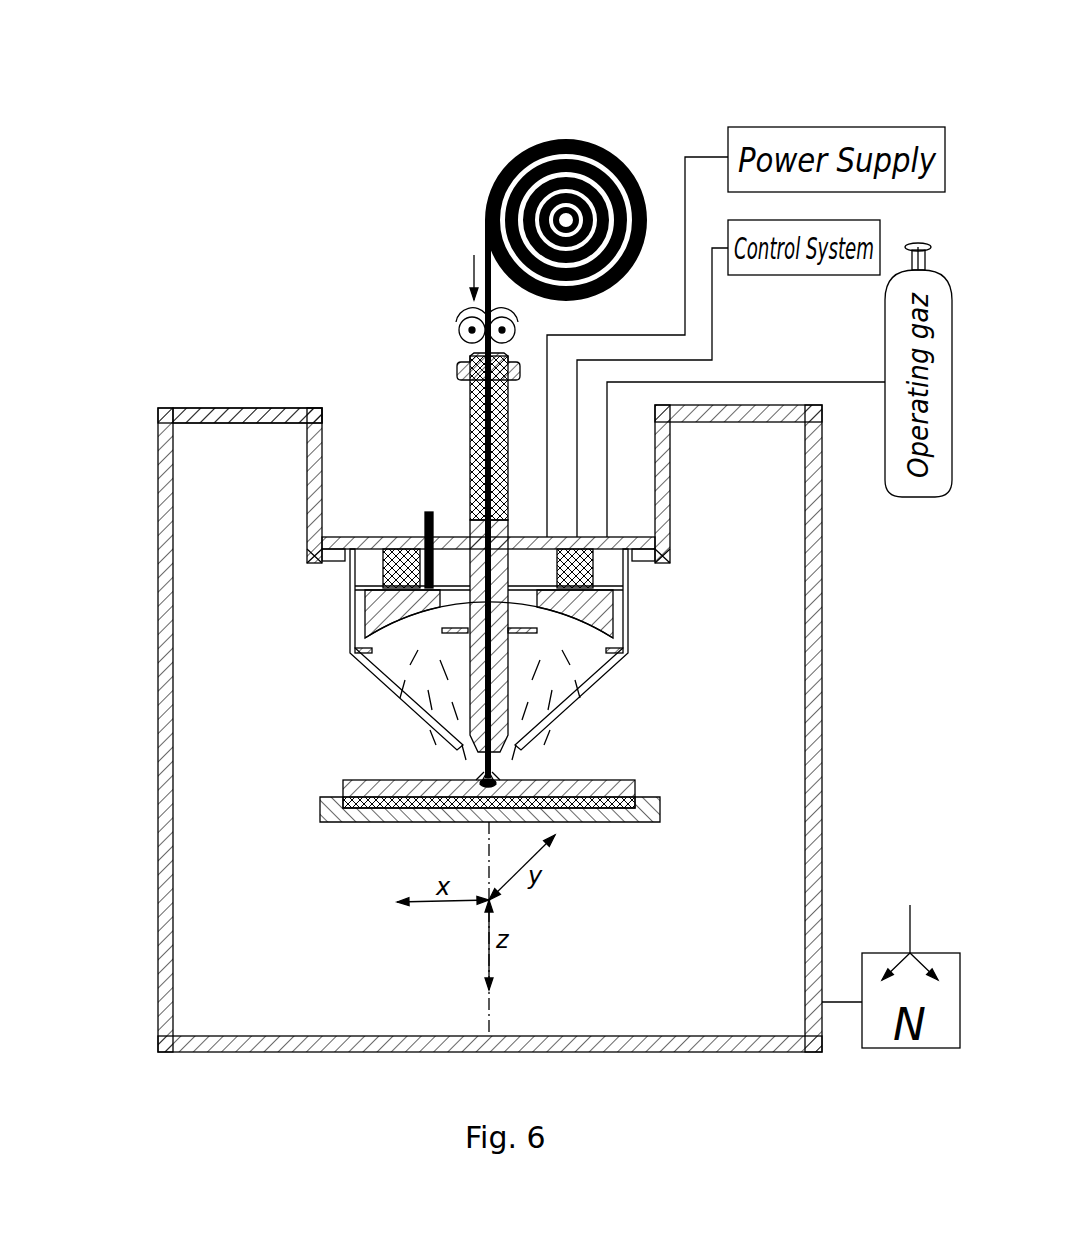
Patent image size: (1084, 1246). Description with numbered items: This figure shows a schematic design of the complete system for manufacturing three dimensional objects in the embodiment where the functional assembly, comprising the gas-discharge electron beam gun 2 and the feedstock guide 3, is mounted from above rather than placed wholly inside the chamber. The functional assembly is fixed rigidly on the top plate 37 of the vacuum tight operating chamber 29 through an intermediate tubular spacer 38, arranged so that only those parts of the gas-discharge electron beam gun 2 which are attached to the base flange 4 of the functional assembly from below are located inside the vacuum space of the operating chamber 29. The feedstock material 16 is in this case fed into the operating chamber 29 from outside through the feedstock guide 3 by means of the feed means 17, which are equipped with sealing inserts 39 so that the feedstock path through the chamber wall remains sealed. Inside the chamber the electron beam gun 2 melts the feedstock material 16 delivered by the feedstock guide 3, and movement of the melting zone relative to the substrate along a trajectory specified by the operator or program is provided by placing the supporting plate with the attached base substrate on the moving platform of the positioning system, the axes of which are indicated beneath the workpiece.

The feedstock material 16 is at (485, 252).
The feed means 17 is at (463, 328).
The sealing inserts 39 is at (457, 373).
The feedstock guide 3 is at (467, 522).
The top plate 37 is at (235, 413).
The intermediate tubular spacer 38 is at (313, 467).
The operating chamber 29 is at (163, 615).
The base flange 4 is at (317, 562).
The gas-discharge electron beam gun 2 is at (350, 590).